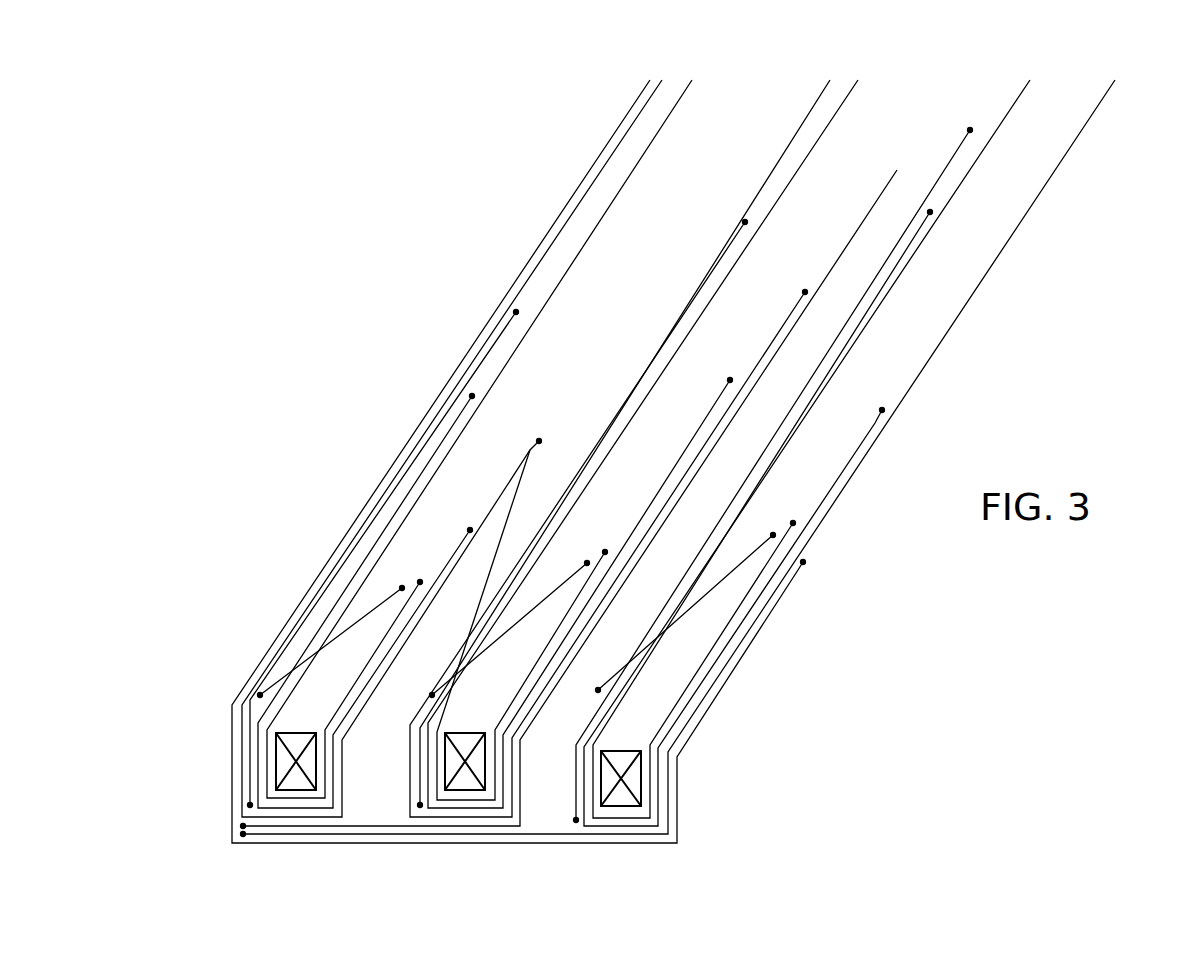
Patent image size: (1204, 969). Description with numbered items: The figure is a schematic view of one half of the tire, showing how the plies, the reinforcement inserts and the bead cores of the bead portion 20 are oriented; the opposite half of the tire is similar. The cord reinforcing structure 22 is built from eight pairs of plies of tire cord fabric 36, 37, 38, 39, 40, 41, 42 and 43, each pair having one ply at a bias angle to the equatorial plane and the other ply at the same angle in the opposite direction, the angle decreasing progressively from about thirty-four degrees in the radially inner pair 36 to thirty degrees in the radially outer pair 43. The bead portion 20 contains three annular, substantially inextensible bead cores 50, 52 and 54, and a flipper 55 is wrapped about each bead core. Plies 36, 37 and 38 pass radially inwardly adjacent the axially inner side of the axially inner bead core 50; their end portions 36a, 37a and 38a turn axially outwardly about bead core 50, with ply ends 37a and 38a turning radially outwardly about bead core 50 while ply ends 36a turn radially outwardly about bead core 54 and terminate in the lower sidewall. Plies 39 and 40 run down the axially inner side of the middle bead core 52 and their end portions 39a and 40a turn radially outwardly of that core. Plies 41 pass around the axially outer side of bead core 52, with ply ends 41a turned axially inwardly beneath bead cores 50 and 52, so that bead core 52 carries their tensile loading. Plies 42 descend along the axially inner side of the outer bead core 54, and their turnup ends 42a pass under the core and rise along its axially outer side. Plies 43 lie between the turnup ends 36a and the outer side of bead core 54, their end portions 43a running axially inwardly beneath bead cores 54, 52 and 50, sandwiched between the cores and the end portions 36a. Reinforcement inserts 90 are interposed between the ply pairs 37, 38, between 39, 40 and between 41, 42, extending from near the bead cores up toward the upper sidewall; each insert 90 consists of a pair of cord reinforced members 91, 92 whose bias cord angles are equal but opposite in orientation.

The bead portion 20 is at (710, 812).
The cord reinforcing structure 22 is at (1103, 133).
The carcass plies 36 is at (566, 204).
The carcass plies 37 is at (558, 235).
The carcass plies 38 is at (603, 217).
The carcass plies 39 is at (779, 162).
The carcass plies 40 is at (816, 146).
The carcass plies 41 is at (892, 172).
The carcass plies 42 is at (1005, 118).
The carcass plies 43 is at (1046, 185).
The ply end portions 36a is at (800, 570).
The ply end portions 37a is at (532, 448).
The ply end portions 38a is at (464, 541).
The ply end portions 39a is at (802, 290).
The ply end portions 40a is at (729, 378).
The ply ends 41a is at (262, 828).
The turnup ends 42a is at (878, 422).
The ply end portions 43a is at (243, 836).
The bead core 50 is at (300, 783).
The bead core 52 is at (463, 785).
The bead core 54 is at (620, 798).
The flipper 55 is at (332, 662).
The reinforcement insert 90 is at (405, 466).
The cord reinforced member 91 is at (370, 531).
The cord reinforced member 92 is at (362, 558).